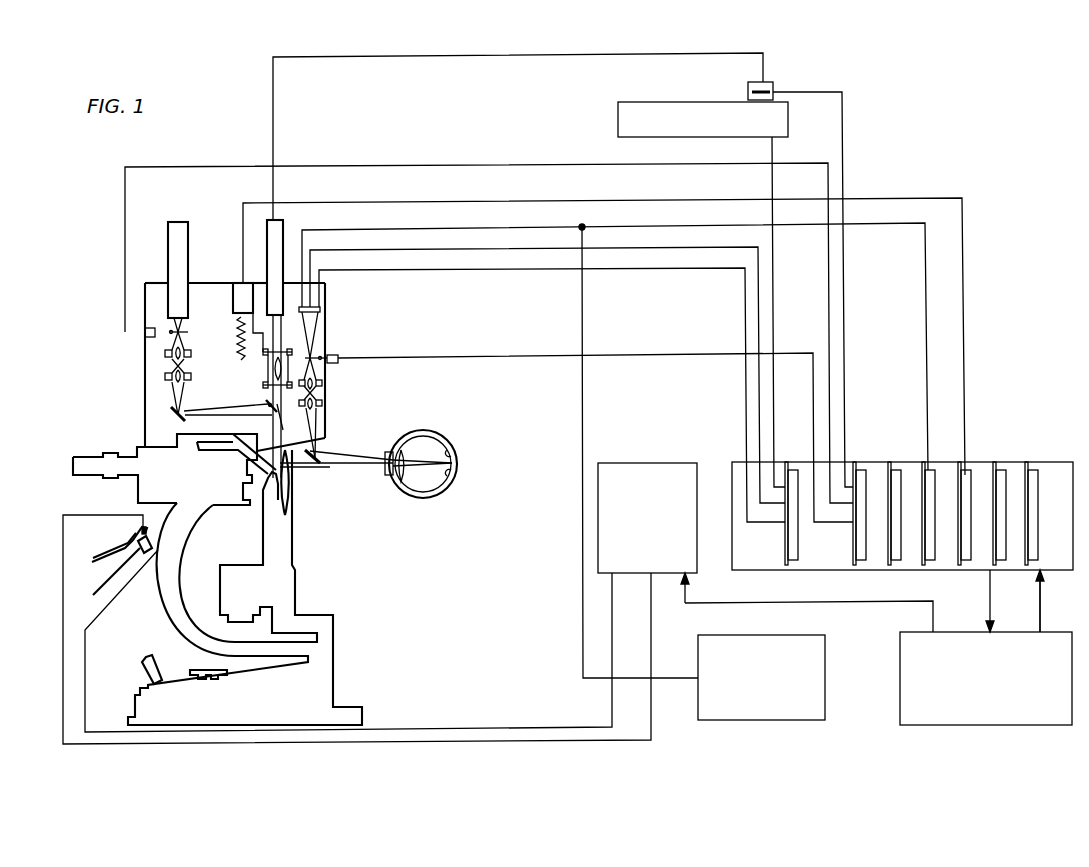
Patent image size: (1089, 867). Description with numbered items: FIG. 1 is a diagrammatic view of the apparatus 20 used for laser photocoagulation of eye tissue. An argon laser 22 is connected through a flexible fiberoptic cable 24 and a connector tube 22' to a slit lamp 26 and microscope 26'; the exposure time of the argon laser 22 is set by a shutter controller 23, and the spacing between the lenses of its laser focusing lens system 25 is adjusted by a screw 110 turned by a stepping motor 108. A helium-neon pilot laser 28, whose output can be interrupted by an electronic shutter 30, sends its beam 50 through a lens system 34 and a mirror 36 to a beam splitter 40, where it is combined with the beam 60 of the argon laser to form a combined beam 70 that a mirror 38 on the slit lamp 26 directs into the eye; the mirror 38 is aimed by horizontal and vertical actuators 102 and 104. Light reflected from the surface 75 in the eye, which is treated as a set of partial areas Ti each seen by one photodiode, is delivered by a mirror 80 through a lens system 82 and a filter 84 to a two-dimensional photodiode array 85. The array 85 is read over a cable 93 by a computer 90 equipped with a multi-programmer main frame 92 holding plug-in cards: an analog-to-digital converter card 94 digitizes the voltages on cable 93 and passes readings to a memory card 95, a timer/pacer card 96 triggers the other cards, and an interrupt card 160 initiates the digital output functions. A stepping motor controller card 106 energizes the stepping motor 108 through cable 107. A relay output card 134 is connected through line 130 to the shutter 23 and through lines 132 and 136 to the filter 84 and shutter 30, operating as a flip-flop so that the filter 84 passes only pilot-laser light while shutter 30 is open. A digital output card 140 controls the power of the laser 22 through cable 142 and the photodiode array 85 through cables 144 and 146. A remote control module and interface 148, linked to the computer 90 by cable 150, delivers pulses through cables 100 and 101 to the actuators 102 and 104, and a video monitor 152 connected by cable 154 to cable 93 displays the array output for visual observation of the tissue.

The apparatus 20 is at (348, 675).
The argon laser 22 is at (677, 106).
The connector tube 22' is at (299, 342).
The shutter controller 23 is at (773, 86).
The flexible fiberoptic cable 24 is at (434, 58).
The laser focusing lens system 25 is at (296, 340).
The slit lamp 26 is at (245, 587).
The microscope 26' is at (172, 471).
The helium-neon laser 28 is at (176, 222).
The electronic shutter 30 is at (145, 333).
The lens system 34 is at (165, 378).
The mirror 36 is at (172, 412).
The mirror 38 is at (288, 514).
The beam splitter 40 is at (292, 418).
The beam of the helium-neon laser 50 is at (232, 415).
The beam of the argon laser 60 is at (268, 404).
The combined beam 70 is at (355, 468).
The surface in the eye 75 is at (448, 452).
The mirror 80 is at (321, 459).
The lens system 82 is at (322, 386).
The filter 84 is at (338, 355).
The two dimensional photodiode array 85 is at (320, 308).
The computer 90 is at (900, 715).
The multi-programmer main frame 92 is at (1036, 462).
The cable 93 is at (460, 229).
The analog-to-digital converter card 94 is at (935, 566).
The memory card 95 is at (900, 566).
The timer/pacer card 96 is at (1008, 566).
The cable 100 is at (548, 727).
The cable 101 is at (651, 718).
The horizontal actuator 102 is at (115, 587).
The vertical actuator 104 is at (128, 530).
The stepping motor controller card 106 is at (968, 472).
The cable 107 is at (402, 203).
The stepping motor 108 is at (238, 283).
The screw 110 is at (238, 330).
The line 130 is at (845, 292).
The line 132 is at (498, 355).
The relay output card 134 is at (866, 566).
The line 136 is at (504, 166).
The digital output card 140 is at (790, 566).
The cable 142 is at (774, 144).
The cable 144 is at (640, 249).
The cable 146 is at (630, 272).
The remote control module and interface 148 is at (654, 463).
The cable 150 is at (825, 603).
The video monitor 152 is at (825, 690).
The cable 154 is at (583, 588).
The interrupt card 160 is at (1015, 440).
The partial area Ti is at (455, 477).